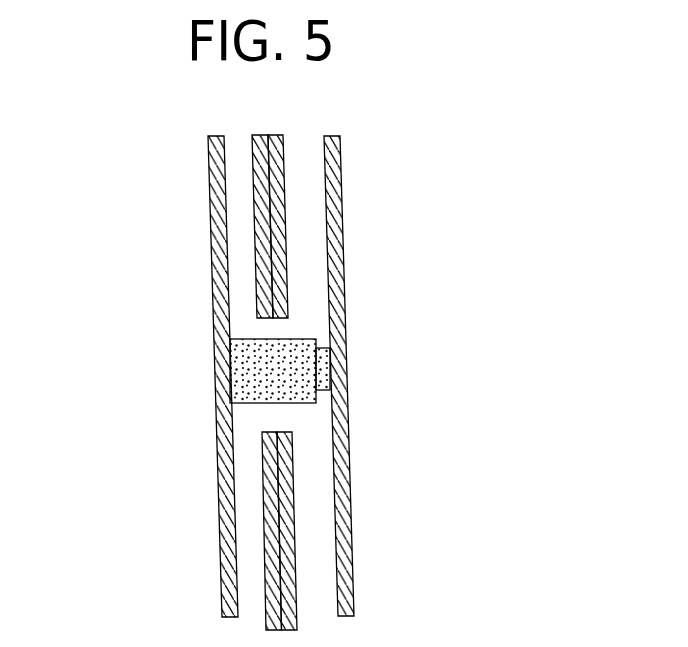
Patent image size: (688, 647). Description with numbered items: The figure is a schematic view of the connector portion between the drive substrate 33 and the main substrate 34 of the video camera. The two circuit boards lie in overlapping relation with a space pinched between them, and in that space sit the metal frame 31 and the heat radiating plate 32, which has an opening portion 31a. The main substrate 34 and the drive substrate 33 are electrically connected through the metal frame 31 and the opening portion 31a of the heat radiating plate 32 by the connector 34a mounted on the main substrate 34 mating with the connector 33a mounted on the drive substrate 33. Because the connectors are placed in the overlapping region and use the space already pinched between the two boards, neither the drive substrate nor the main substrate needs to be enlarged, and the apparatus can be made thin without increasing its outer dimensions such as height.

The metal frame 31 is at (262, 545).
The opening portion 31a is at (280, 330).
The heat radiating plate 32 is at (297, 532).
The drive substrate 33 is at (210, 222).
The connector 33a is at (262, 376).
The main substrate 34 is at (341, 203).
The connector 34a is at (318, 371).